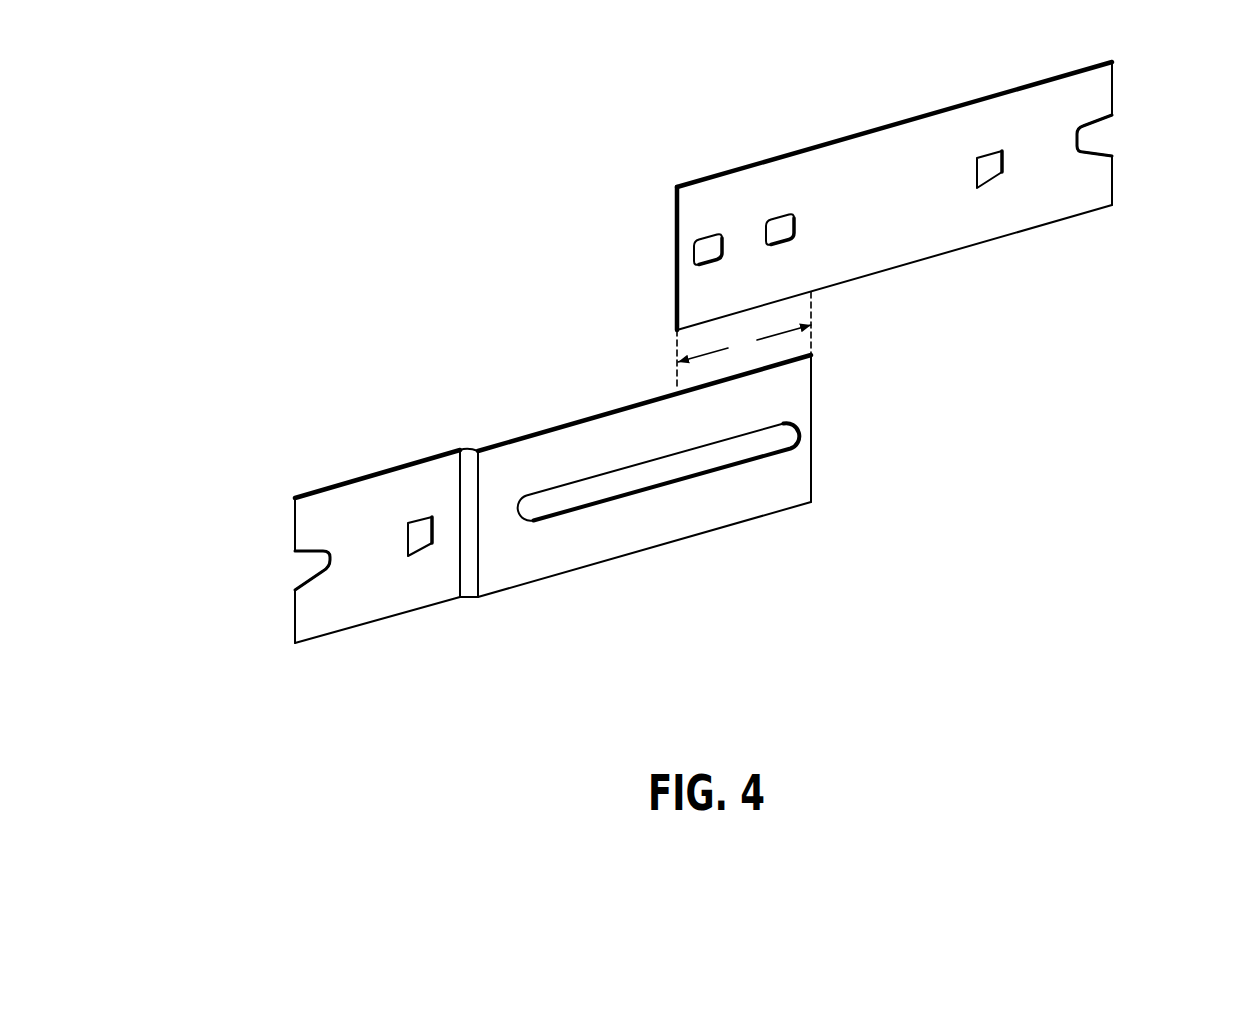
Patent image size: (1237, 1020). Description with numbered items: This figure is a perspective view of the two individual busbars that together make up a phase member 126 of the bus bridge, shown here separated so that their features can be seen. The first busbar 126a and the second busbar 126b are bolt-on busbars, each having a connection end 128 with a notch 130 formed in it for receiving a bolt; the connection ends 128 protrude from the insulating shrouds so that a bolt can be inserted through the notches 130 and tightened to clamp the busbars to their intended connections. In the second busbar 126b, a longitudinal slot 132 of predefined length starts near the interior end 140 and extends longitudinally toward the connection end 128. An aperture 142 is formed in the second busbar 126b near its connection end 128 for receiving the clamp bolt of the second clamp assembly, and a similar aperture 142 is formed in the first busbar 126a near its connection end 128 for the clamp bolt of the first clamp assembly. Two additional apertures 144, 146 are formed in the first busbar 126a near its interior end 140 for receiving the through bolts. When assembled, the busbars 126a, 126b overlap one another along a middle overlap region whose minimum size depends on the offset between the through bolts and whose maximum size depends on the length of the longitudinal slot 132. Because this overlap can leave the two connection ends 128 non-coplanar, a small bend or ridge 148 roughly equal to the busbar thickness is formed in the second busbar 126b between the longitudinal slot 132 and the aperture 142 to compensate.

The phase member 126 is at (428, 232).
The first busbar 126a is at (878, 127).
The second busbar 126b is at (605, 413).
The connection end 128 is at (1112, 185).
The notch 130 is at (1110, 138).
The longitudinal slot 132 is at (662, 476).
The interior end 140 is at (677, 275).
The aperture 142 is at (1000, 176).
The aperture 144 is at (700, 232).
The aperture 146 is at (773, 208).
The bend or ridge 148 is at (472, 442).